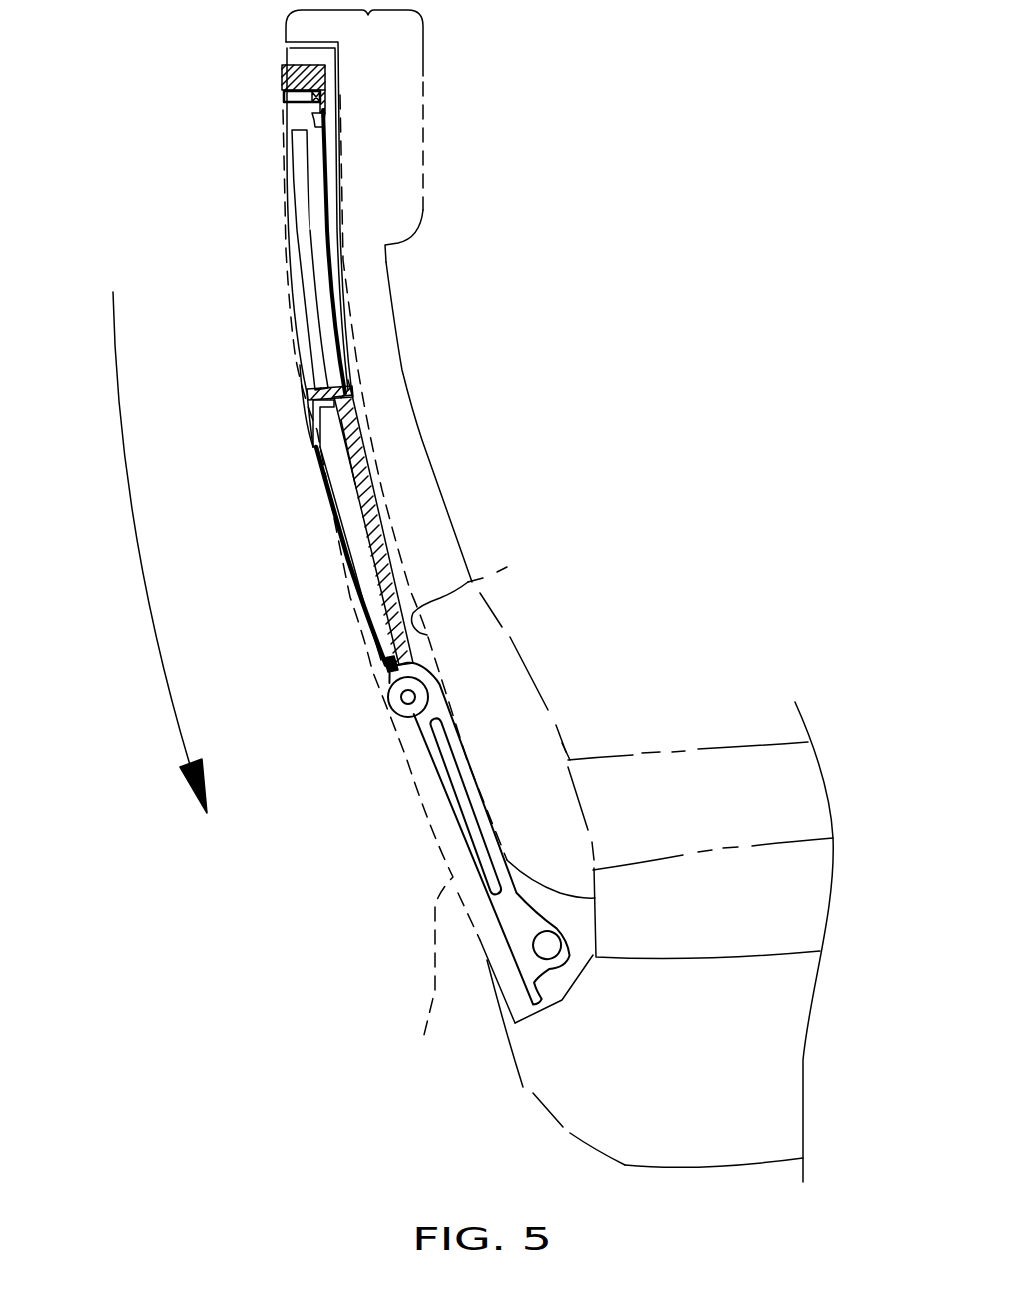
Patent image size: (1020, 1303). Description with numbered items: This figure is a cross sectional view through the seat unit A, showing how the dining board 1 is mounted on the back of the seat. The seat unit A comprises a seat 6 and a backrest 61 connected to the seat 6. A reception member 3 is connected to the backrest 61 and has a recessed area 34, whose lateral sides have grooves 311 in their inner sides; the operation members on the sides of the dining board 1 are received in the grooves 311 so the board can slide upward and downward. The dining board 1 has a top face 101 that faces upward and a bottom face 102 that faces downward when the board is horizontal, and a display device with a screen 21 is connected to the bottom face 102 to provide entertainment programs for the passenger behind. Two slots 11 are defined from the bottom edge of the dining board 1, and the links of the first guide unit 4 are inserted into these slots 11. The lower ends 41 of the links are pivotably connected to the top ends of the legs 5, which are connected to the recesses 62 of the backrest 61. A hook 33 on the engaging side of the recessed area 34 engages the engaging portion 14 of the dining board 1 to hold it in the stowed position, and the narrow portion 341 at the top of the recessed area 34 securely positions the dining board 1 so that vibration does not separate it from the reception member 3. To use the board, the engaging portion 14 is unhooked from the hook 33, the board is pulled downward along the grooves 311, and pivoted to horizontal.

The dining board 1 is at (295, 409).
The reception member 3 is at (270, 150).
The first guide unit 4 is at (376, 659).
The legs 5 is at (433, 812).
The seat 6 is at (688, 751).
The slots 11 is at (350, 495).
The engaging portion 14 is at (342, 385).
The screen 21 is at (320, 508).
The hook 33 is at (312, 118).
The recessed area 34 is at (310, 372).
The lower ends 41 is at (397, 703).
The backrest 61 is at (399, 604).
The recesses 62 is at (515, 560).
The top face 101 is at (350, 463).
The bottom face 102 is at (313, 443).
The groove 311 is at (305, 262).
The narrow portion 341 is at (300, 185).
The seat unit A is at (290, 592).